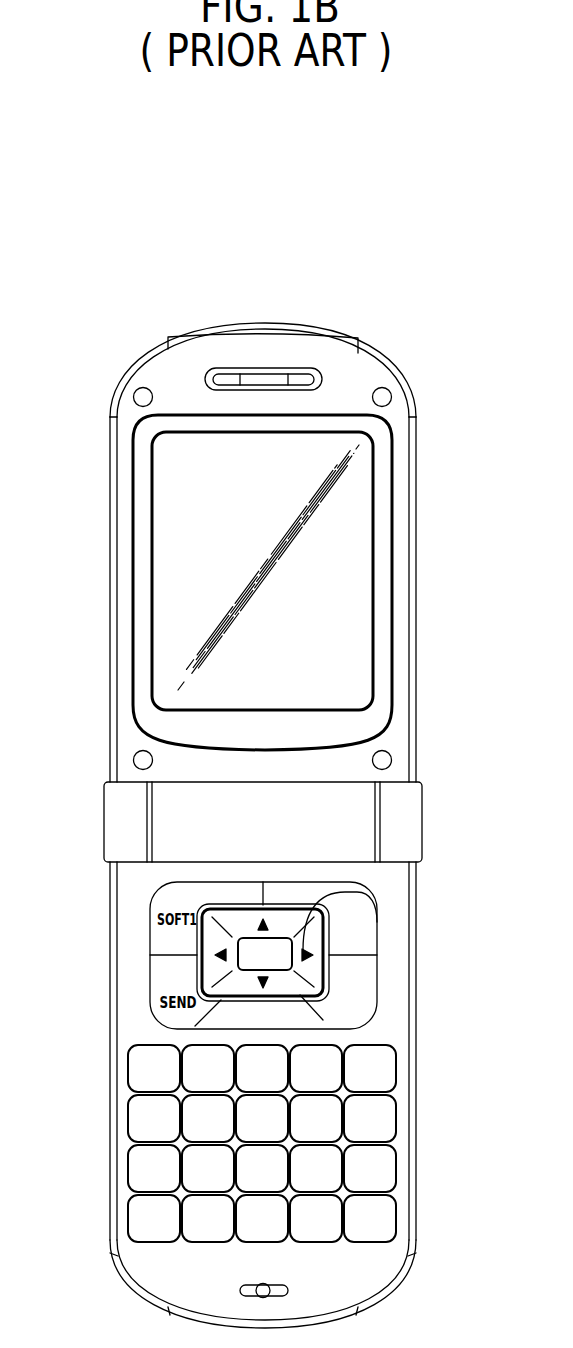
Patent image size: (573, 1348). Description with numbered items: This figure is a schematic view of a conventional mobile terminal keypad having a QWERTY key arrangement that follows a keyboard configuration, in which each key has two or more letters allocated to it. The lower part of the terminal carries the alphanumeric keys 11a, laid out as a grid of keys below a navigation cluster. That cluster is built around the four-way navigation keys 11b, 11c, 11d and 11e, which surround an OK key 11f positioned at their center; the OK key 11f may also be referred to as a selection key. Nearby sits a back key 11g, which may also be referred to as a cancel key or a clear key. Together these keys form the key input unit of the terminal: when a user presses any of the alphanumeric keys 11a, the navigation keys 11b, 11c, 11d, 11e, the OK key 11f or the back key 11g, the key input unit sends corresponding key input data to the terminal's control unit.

The alphanumeric keys 11a is at (420, 1050).
The four-way navigation key 11b is at (383, 891).
The four-way navigation key 11c is at (376, 1008).
The four-way navigation key 11d is at (217, 950).
The four-way navigation key 11e is at (328, 948).
The OK key 11f is at (215, 963).
The back key 11g is at (220, 1017).